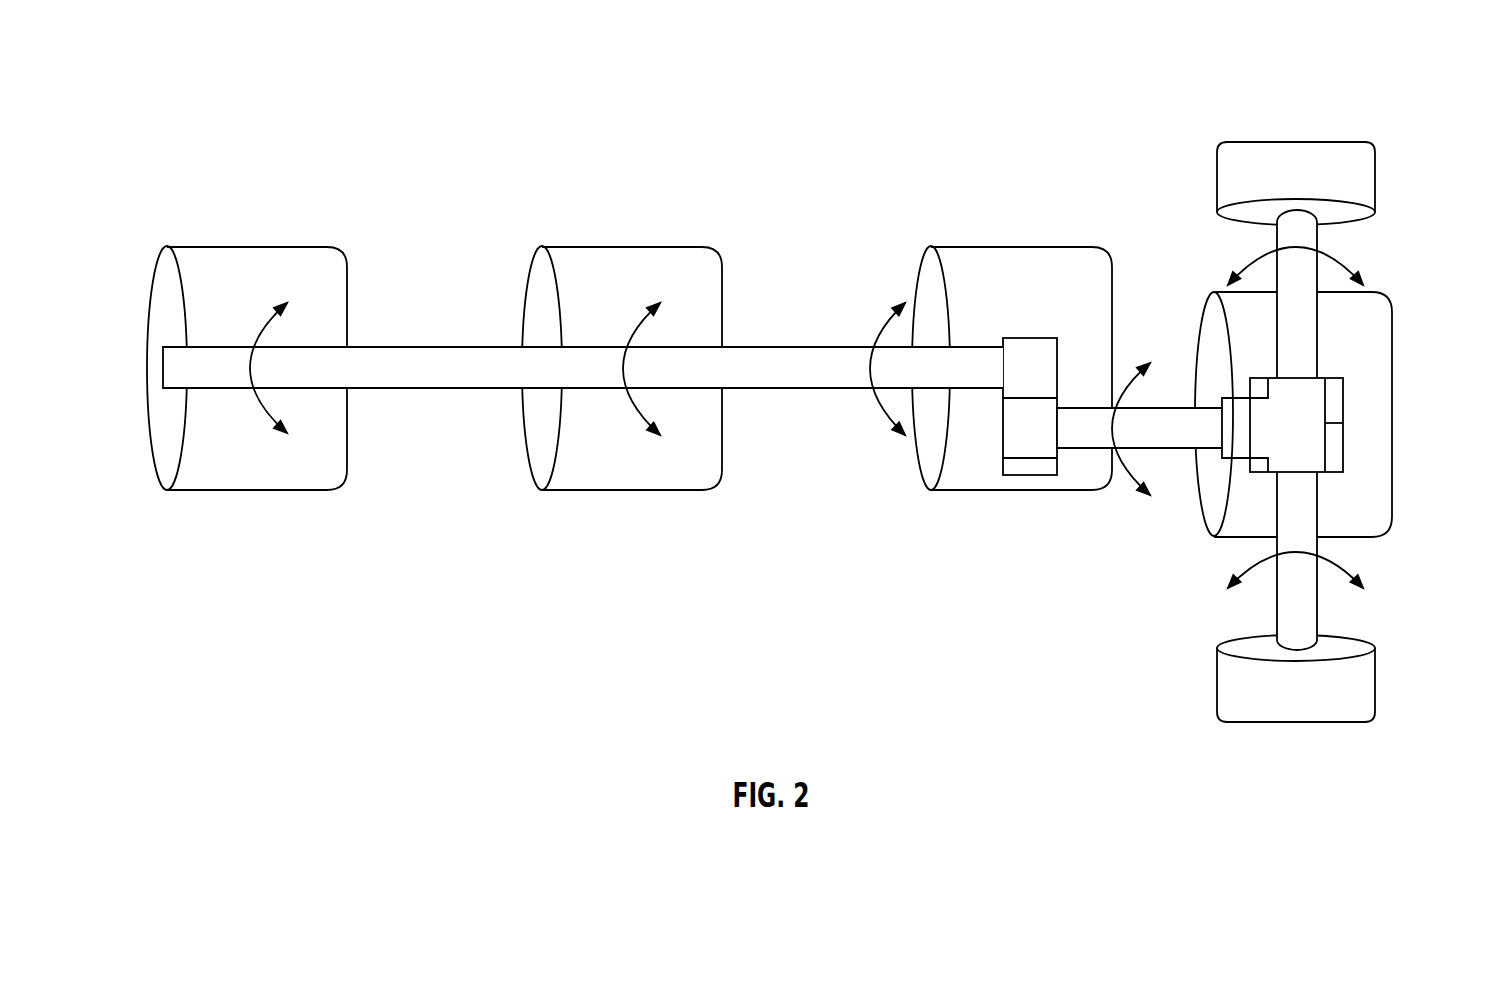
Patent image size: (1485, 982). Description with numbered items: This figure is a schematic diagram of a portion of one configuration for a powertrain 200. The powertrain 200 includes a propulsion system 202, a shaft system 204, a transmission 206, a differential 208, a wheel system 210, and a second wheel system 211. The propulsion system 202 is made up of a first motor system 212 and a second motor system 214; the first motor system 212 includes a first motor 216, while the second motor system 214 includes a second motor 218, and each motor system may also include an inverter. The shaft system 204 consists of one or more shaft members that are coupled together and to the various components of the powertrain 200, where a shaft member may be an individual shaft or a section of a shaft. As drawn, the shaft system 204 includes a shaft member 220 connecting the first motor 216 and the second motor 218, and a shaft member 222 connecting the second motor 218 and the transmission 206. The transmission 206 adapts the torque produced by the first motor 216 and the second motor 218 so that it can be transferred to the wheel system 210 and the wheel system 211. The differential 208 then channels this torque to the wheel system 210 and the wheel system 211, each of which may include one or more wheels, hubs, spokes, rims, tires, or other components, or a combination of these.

The powertrain 200 is at (784, 432).
The propulsion system 202 is at (434, 304).
The shaft system 204 is at (583, 331).
The transmission 206 is at (975, 247).
The differential 208 is at (1393, 326).
The wheel system 210 is at (1296, 137).
The wheel system 211 is at (1296, 728).
The first motor system 212 is at (248, 244).
The second motor system 214 is at (621, 243).
The first motor 216 is at (193, 265).
The second motor 218 is at (568, 265).
The shaft member 220 is at (448, 347).
The shaft member 222 is at (790, 347).